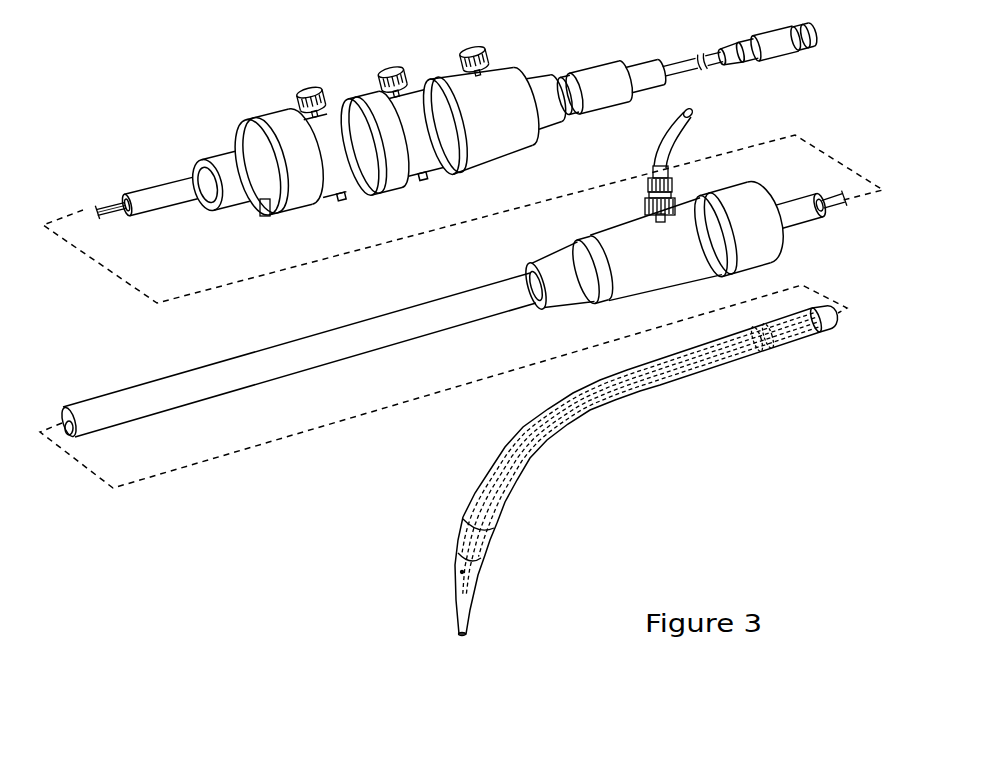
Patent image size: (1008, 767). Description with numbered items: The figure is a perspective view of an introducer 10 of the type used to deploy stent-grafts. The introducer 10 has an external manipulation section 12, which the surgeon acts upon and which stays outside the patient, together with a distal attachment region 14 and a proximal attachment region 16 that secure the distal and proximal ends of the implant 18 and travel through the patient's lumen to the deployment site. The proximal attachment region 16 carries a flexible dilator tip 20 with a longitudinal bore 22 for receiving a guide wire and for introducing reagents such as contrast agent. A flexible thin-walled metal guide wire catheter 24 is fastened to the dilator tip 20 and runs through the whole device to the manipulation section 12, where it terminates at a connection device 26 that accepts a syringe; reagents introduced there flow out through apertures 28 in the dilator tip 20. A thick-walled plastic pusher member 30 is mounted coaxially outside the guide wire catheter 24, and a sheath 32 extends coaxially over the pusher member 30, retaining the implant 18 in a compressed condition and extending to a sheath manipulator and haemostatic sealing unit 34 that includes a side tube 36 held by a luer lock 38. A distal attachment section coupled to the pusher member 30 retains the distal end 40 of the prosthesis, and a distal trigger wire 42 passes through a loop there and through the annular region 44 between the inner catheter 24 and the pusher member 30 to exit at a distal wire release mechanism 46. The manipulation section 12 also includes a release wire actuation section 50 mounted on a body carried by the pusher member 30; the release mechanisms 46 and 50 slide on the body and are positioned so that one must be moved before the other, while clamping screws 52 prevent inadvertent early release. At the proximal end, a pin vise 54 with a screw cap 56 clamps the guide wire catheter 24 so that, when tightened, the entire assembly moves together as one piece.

The introducer 10 is at (188, 106).
The external manipulation section 12 is at (246, 96).
The distal attachment region 14 is at (777, 343).
The proximal attachment region 16 is at (486, 595).
The implant 18 is at (520, 473).
The dilator tip 20 is at (460, 605).
The bore 22 is at (462, 632).
The guide wire catheter 24 is at (112, 200).
The connection device 26 is at (795, 53).
The apertures 28 is at (460, 558).
The pusher member 30 is at (180, 203).
The sheath 32 is at (172, 385).
The sheath manipulator and haemostatic sealing unit 34 is at (743, 180).
The side tube 36 is at (668, 135).
The luer lock 38 is at (657, 178).
The distal end 40 is at (753, 345).
The distal trigger wire 42 is at (108, 220).
The annular region 44 is at (133, 217).
The distal wire release mechanism 46 is at (265, 218).
The release wire actuation section 50 is at (382, 192).
The clamping screws 52 is at (310, 86).
The pin vise 54 is at (593, 68).
The screw cap 56 is at (643, 64).